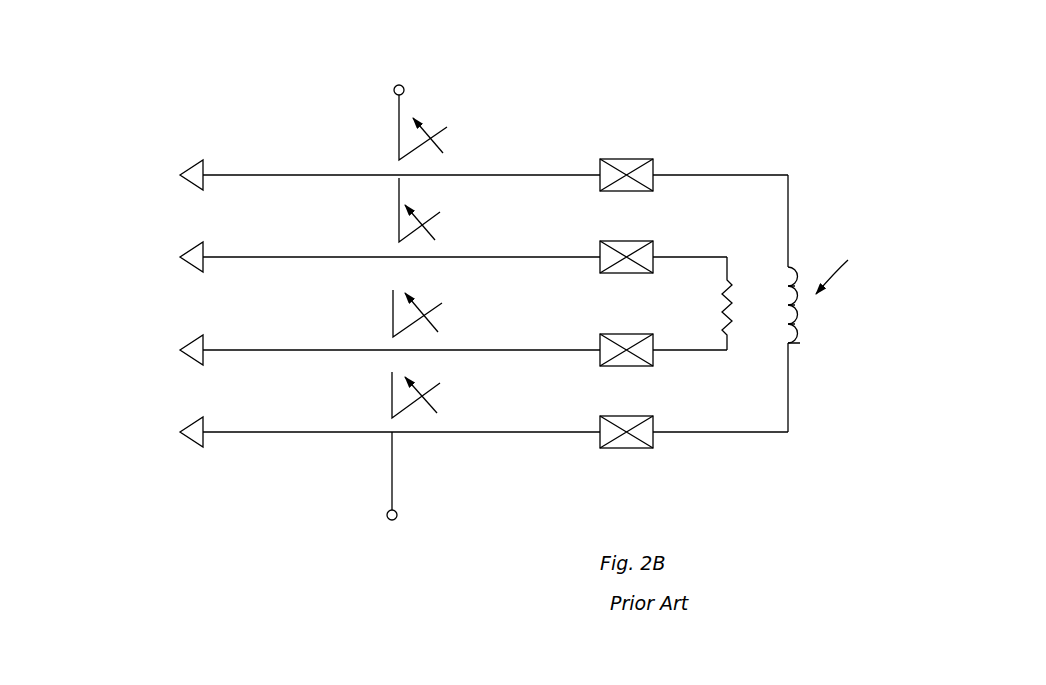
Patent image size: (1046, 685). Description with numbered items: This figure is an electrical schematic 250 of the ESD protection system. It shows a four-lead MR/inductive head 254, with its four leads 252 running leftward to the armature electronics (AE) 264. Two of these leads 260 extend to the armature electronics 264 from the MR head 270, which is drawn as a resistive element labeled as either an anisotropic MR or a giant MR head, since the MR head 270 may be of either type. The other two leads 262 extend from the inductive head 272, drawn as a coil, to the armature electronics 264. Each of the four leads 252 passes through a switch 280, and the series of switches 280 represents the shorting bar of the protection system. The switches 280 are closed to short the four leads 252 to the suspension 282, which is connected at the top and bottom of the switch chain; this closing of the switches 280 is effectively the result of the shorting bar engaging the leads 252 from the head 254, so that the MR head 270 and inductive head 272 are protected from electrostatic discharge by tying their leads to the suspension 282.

The electrical schematic 250 is at (620, 80).
The four leads 252 is at (232, 507).
The MR/inductive head 254 is at (734, 446).
The two leads 260 is at (300, 254).
The two leads 262 is at (302, 172).
The armature electronics (AE) 264 is at (90, 262).
The MR head 270 is at (728, 285).
The inductive head 272 is at (800, 343).
The switches 280 is at (438, 120).
The suspension 282 is at (397, 86).